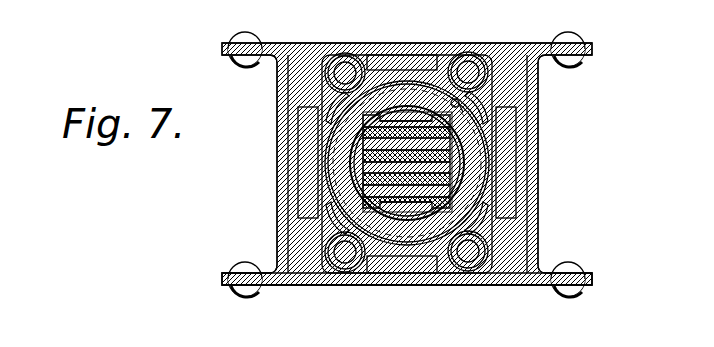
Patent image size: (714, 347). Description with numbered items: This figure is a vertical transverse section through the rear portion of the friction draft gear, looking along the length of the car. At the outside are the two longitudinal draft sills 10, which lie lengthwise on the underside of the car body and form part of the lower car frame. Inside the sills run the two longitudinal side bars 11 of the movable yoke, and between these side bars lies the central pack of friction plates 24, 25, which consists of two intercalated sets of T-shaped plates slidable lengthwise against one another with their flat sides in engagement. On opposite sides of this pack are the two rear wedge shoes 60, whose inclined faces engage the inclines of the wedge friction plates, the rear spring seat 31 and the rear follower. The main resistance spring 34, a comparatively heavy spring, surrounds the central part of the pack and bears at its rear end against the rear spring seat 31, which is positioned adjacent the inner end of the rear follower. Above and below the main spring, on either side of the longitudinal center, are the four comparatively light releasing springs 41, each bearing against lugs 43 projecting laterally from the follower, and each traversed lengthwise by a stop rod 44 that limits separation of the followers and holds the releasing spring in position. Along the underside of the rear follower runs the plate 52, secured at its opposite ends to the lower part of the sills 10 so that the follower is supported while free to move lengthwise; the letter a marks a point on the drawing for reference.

The longitudinal draft sills 10 is at (277, 87).
The longitudinal side bars 11 is at (303, 169).
The friction plates 24 is at (334, 112).
The friction plates 25 is at (452, 177).
The rear spring seat 31 is at (353, 157).
The main resistance spring 34 is at (476, 142).
The releasing springs 41 is at (326, 70).
The lugs 43 is at (368, 55).
The stop rods 44 is at (462, 60).
The plate 52 is at (302, 286).
The rear wedge shoes 60 is at (412, 113).
The point a is at (412, 150).